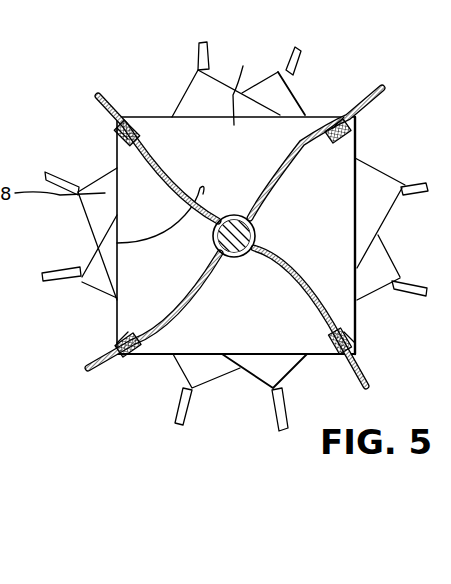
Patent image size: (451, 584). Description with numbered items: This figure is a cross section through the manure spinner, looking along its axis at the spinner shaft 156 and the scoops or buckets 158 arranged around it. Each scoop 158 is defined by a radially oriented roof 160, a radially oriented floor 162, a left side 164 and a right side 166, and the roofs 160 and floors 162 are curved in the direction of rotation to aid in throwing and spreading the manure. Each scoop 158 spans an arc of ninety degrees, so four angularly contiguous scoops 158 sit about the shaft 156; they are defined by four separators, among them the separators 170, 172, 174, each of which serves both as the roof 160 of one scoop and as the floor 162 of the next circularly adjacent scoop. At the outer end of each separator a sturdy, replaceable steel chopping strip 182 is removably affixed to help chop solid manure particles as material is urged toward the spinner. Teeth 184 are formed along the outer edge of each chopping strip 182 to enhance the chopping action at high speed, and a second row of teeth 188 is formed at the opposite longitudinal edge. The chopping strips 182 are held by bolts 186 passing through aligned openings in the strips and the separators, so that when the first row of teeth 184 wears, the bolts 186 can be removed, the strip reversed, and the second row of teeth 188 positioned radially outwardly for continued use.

The spinner shaft 156 is at (263, 212).
The scoop 158 is at (153, 114).
The roof 160 is at (117, 243).
The floor 162 is at (158, 358).
The left side 164 is at (214, 75).
The right side 166 is at (245, 85).
The separator 170 is at (290, 172).
The separator 172 is at (283, 267).
The separator 174 is at (192, 308).
The chopping strip 182 is at (111, 93).
The teeth 184 is at (100, 98).
The bolt 186 is at (115, 146).
The second row of teeth 188 is at (137, 141).